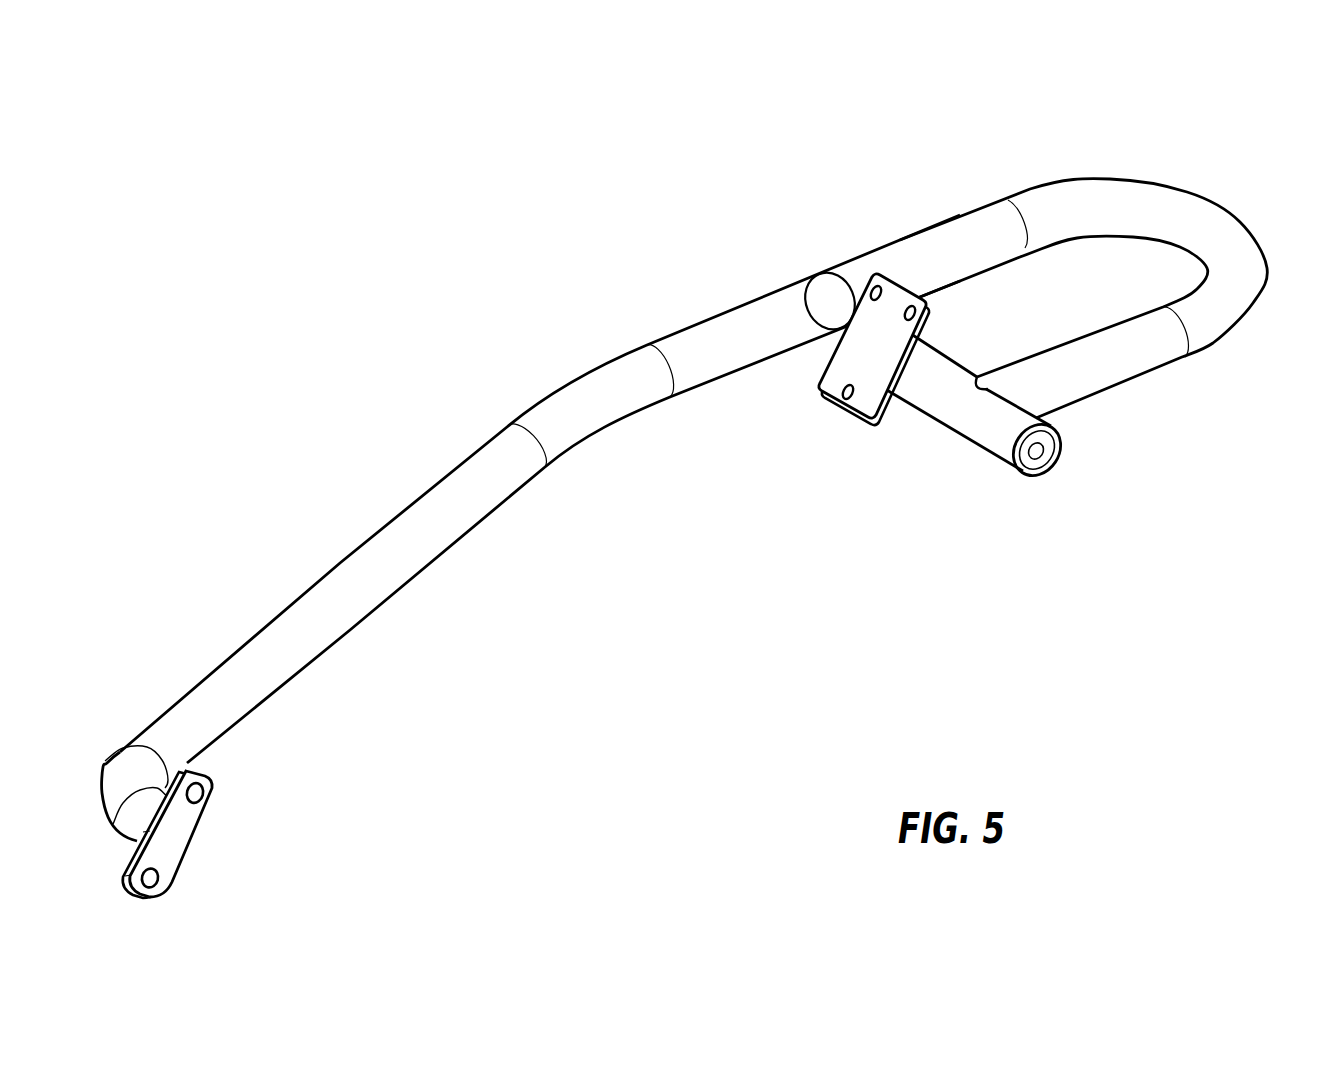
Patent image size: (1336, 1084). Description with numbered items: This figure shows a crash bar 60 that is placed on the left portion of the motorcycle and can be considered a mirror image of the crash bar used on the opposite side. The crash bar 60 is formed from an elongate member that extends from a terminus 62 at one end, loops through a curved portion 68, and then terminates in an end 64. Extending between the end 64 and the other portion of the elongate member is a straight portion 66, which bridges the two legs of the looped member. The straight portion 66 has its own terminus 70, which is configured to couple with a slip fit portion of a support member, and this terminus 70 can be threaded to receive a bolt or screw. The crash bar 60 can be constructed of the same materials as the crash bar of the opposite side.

The crash bar 60 is at (753, 158).
The terminus 62 is at (133, 780).
The end 64 is at (990, 395).
The straight portion 66 is at (930, 357).
The curved portion 68 is at (1188, 207).
The terminus 70 is at (1040, 453).